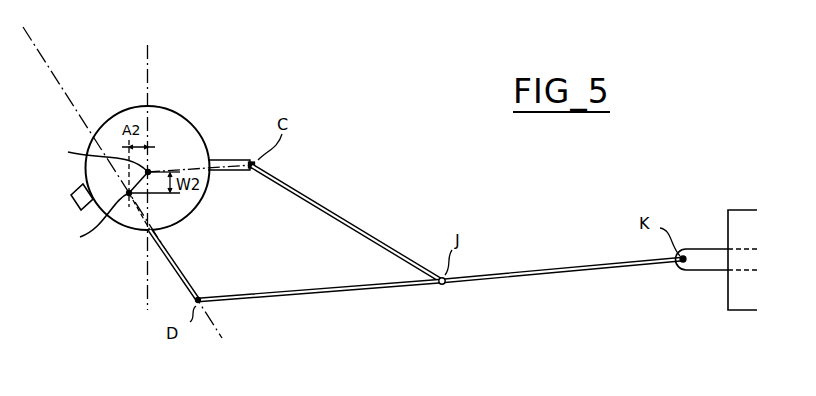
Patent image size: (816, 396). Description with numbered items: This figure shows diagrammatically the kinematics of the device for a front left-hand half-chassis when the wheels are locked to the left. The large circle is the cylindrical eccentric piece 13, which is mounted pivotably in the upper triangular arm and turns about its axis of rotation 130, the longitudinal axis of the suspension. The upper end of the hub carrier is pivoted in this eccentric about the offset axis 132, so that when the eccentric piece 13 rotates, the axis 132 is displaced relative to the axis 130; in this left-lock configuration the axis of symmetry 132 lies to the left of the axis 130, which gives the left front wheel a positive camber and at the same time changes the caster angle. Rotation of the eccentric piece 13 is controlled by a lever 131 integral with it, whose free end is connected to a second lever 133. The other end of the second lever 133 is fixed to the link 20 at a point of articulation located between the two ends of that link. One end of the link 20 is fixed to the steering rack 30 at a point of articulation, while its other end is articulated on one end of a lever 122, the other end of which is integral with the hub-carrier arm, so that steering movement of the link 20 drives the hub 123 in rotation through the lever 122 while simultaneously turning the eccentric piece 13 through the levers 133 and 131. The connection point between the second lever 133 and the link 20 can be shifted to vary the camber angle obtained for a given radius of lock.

The eccentric piece 13 is at (182, 126).
The axis of rotation 130 is at (90, 153).
The offset axis 132 is at (86, 223).
The hub 123 is at (72, 196).
The lever 131 is at (226, 174).
The second lever 133 is at (348, 222).
The lever 122 is at (186, 268).
The link 20 is at (531, 278).
The steering rack 30 is at (700, 246).